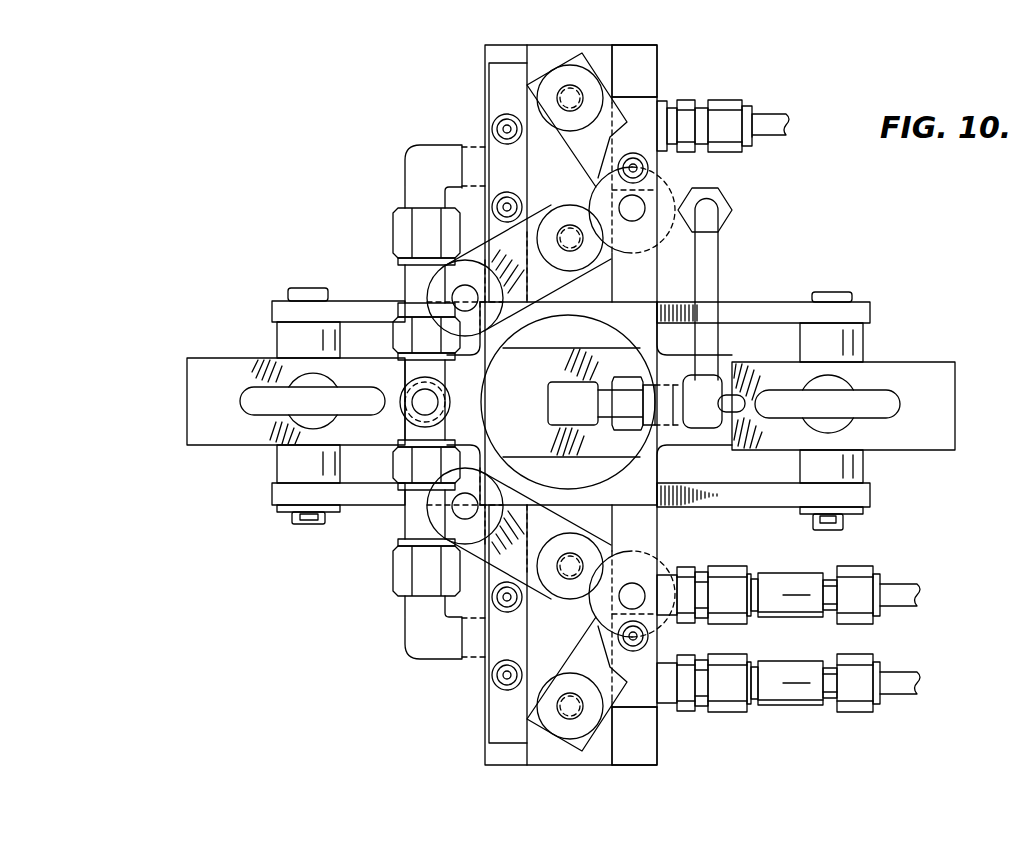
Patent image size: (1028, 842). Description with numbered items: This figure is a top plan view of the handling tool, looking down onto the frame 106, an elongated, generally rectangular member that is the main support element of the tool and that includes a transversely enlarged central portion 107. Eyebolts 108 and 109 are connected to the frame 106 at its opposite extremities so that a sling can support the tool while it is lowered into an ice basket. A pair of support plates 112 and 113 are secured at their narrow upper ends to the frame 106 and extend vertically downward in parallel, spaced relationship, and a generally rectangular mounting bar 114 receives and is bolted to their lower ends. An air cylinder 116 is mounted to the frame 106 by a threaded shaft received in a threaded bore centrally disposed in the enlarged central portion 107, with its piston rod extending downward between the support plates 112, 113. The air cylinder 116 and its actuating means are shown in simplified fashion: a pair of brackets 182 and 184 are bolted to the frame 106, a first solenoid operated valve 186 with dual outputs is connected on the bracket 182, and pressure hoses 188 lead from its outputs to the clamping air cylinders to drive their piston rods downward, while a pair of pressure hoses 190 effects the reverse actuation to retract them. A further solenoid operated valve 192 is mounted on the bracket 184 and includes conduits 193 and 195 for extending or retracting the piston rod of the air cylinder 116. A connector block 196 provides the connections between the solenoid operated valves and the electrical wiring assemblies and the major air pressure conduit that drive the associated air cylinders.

The frame 106 is at (875, 402).
The transversely enlarged central portion 107 is at (589, 403).
The eyebolt 108 is at (868, 397).
The eyebolt 109 is at (245, 395).
The support plate 112 is at (738, 497).
The support plate 113 is at (780, 308).
The mounting bar 114 is at (647, 68).
The air cylinder 116 is at (530, 380).
The bracket 182 is at (490, 752).
The bracket 184 is at (490, 51).
The first solenoid operated valve 186 is at (593, 755).
The conduits or pressure hoses 188 is at (903, 583).
The pressure hoses 190 is at (905, 673).
The further solenoid operated valve 192 is at (535, 57).
The conduit 193 is at (768, 117).
The conduit 195 is at (718, 262).
The connector block 196 is at (577, 163).